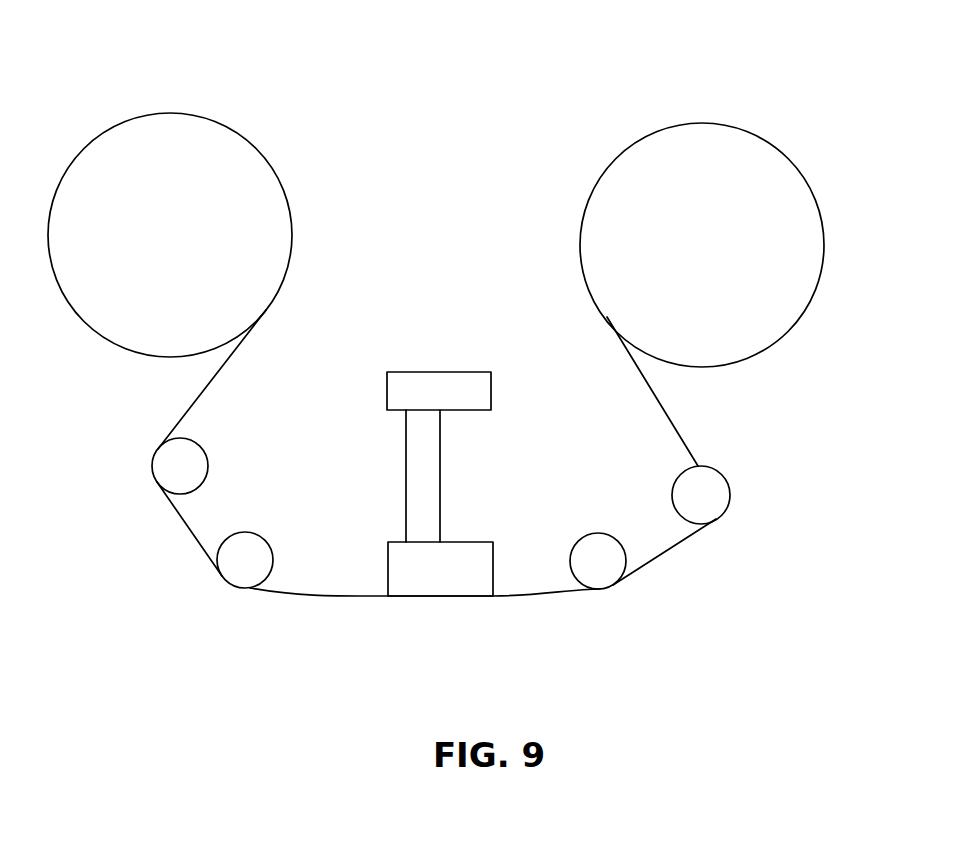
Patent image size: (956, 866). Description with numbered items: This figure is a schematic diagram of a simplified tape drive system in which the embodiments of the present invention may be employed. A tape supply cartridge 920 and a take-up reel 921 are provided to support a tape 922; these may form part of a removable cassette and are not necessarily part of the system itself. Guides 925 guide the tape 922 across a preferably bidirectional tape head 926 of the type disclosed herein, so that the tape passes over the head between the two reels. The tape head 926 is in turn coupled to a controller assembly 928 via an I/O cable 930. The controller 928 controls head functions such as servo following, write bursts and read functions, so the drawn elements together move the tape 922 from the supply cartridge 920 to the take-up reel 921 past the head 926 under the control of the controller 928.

The tape supply cartridge 920 is at (170, 113).
The take-up reel 921 is at (702, 123).
The tape 922 is at (320, 593).
The guides 925 is at (208, 466).
The tape head 926 is at (493, 568).
The controller assembly 928 is at (437, 372).
The I/O cable 930 is at (406, 512).